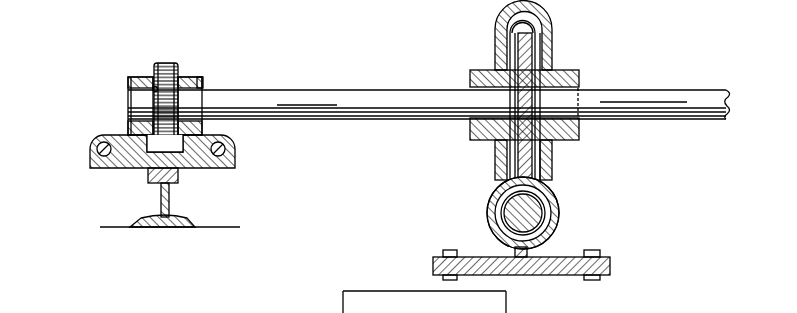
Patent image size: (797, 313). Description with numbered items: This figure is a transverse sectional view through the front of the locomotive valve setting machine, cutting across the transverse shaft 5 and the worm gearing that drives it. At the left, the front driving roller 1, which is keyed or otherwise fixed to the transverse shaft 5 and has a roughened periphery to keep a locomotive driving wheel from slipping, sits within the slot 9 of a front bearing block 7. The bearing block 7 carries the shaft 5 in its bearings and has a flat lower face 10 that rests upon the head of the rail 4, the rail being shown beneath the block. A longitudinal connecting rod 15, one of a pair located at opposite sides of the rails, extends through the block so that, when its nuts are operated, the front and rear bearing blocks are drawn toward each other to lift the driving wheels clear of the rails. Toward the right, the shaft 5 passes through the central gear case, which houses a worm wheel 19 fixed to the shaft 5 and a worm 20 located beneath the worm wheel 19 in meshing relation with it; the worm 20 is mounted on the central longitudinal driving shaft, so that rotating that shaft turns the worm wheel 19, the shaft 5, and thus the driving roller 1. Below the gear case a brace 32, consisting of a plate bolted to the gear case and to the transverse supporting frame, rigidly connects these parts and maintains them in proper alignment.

The front driving roller 1 is at (180, 73).
The rail 4 is at (164, 74).
The transverse shaft 5 is at (670, 97).
The front bearing block 7 is at (203, 89).
The slot 9 is at (154, 95).
The flat lower face 10 is at (123, 169).
The longitudinal connecting rod 15 is at (100, 152).
The worm wheel 19 is at (536, 32).
The worm 20 is at (548, 204).
The brace 32 is at (550, 276).